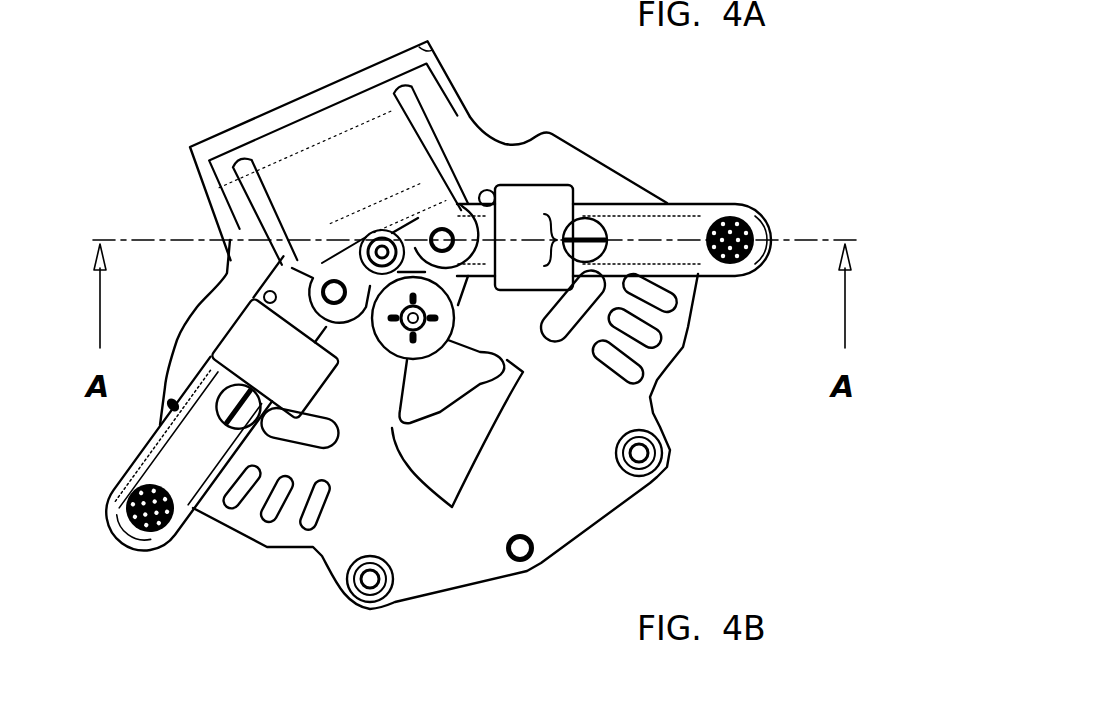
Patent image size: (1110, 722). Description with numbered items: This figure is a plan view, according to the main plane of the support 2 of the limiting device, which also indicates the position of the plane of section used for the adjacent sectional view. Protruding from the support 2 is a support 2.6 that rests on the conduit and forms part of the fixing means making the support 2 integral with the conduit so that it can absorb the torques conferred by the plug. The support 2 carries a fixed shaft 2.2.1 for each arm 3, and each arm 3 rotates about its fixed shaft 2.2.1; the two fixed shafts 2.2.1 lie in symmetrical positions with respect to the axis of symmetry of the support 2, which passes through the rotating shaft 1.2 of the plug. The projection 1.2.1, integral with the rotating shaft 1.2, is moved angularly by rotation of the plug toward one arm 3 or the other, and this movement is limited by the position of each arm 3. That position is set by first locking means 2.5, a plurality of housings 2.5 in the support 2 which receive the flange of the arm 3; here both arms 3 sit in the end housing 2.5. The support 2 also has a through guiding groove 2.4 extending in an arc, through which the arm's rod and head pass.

The support 2 is at (604, 517).
The support 2.6 is at (322, 88).
The fixed shaft 2.2.1 is at (330, 279).
The arm 3 is at (688, 203).
The rotating shaft 1.2 is at (455, 315).
The projection 1.2.1 is at (452, 507).
The through guiding groove 2.4 is at (552, 346).
The first locking means (housings) 2.5 is at (637, 357).